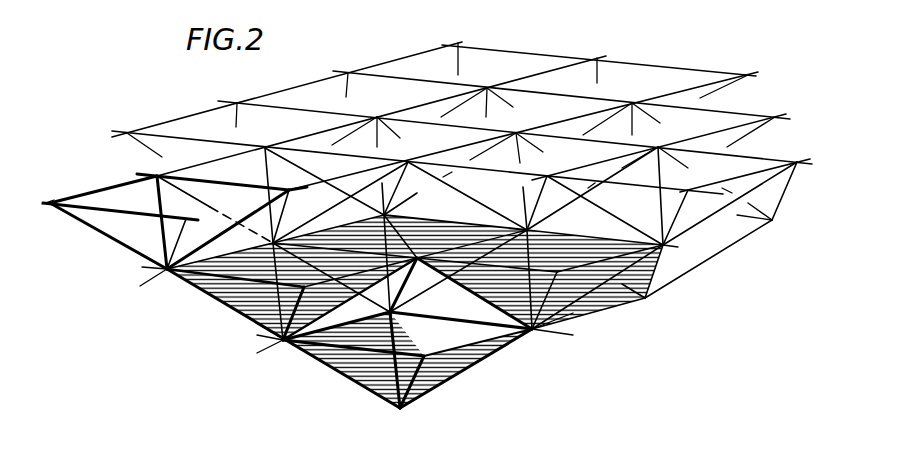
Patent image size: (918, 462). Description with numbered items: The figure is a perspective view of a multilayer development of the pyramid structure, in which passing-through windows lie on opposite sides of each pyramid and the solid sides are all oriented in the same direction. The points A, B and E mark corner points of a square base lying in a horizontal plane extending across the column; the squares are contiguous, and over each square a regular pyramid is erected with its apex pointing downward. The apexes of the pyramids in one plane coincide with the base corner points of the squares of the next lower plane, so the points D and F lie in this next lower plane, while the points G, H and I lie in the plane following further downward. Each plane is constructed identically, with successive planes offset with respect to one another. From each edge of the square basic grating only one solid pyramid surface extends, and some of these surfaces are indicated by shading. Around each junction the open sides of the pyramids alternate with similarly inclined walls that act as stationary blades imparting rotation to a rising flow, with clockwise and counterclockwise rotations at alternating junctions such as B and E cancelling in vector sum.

The base corner point A is at (50, 201).
The base corner point B is at (157, 175).
The apex point in next lower plane D is at (168, 272).
The base corner point E is at (289, 189).
The apex point in next lower plane F is at (417, 257).
The point in next lower plane G is at (283, 343).
The point in next lower plane H is at (424, 355).
The point in next lower plane I is at (532, 332).